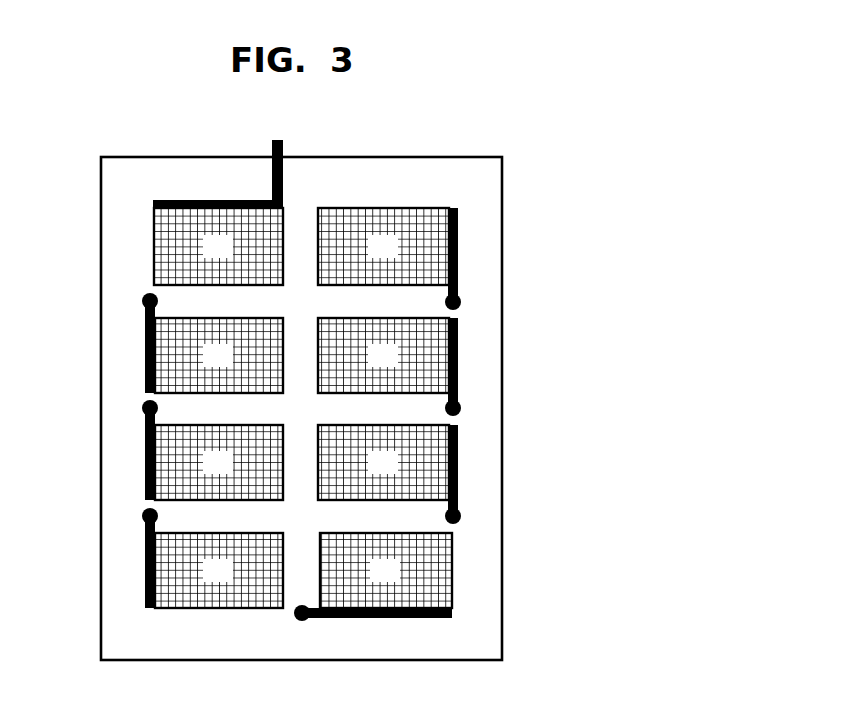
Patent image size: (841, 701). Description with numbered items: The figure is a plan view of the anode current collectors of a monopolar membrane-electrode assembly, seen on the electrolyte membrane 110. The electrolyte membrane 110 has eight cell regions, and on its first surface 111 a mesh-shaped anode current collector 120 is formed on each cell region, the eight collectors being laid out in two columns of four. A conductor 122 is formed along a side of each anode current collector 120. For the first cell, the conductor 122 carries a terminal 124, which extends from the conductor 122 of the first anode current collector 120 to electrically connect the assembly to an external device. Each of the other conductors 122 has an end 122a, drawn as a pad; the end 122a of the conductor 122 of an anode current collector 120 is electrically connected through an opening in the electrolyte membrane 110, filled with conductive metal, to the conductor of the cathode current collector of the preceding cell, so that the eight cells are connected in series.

The electrolyte membrane 110 is at (453, 153).
The first surface 111 is at (410, 158).
The anode current collector 120 is at (155, 243).
The conductor 122 is at (168, 202).
The end of the conductor 122a is at (143, 300).
The terminal 124 is at (277, 140).